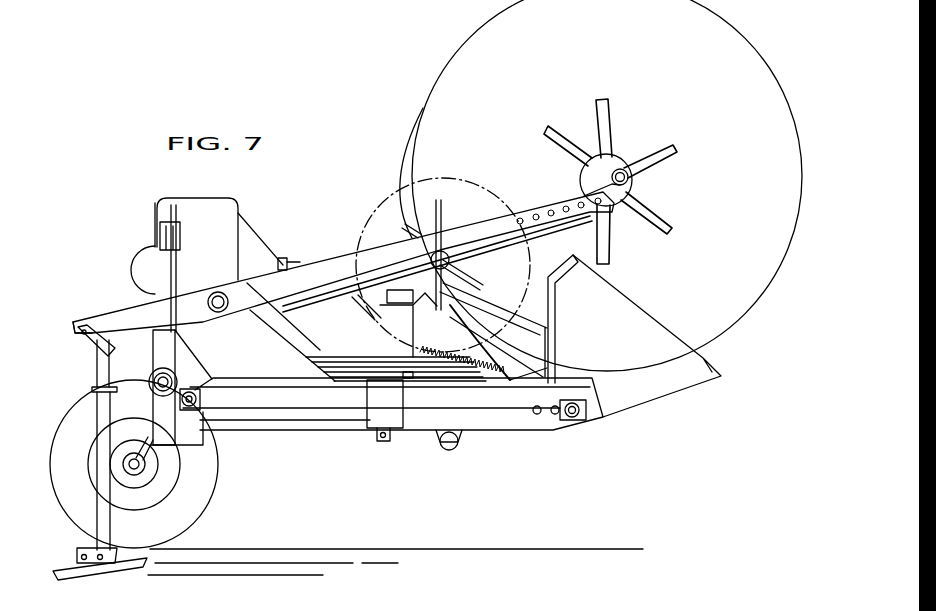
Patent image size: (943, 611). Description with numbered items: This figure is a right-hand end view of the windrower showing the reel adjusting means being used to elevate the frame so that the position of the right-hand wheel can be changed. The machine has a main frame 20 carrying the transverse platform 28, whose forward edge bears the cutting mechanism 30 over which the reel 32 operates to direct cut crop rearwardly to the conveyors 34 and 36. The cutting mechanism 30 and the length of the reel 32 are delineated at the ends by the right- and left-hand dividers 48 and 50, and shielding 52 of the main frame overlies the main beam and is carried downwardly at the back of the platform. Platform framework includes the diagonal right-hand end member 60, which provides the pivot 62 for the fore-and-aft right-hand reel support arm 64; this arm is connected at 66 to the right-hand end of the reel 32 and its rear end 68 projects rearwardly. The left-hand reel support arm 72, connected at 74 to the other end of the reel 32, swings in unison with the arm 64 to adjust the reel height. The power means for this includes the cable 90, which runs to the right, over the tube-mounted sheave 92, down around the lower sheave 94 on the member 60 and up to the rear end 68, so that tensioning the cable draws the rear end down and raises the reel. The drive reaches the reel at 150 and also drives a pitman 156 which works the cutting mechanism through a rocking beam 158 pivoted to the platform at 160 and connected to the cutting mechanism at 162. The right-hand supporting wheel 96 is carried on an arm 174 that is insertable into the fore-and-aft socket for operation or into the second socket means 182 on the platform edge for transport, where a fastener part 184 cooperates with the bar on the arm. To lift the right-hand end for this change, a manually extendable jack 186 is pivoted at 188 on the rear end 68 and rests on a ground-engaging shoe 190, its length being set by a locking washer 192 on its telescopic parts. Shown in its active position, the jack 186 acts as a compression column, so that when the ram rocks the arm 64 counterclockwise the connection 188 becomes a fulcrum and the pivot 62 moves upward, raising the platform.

The main frame 20 is at (159, 189).
The windrower platform 28 is at (590, 384).
The cutting mechanism 30 is at (520, 376).
The reel 32 is at (612, 116).
The conveyor 34 is at (346, 372).
The conveyor 36 is at (370, 358).
The right-hand divider 48 is at (721, 372).
The left-hand divider 50 is at (446, 341).
The shielding 52 is at (213, 204).
The diagonal right-hand end member 60 is at (136, 272).
The pivot 62 is at (214, 312).
The right-hand reel support arm 64 is at (277, 300).
The connection 66 is at (613, 206).
The rear end 68 is at (96, 318).
The left-hand reel support arm 72 is at (297, 313).
The connection 74 is at (426, 268).
The cable 90 is at (176, 276).
The tube-mounted sheave 92 is at (160, 231).
The lower sheave 94 is at (150, 392).
The right-hand supporting wheel 96 is at (75, 494).
The reel drive 150 is at (296, 262).
The pitman 156 is at (197, 412).
The rocking beam 158 is at (300, 411).
The pivot 160 is at (378, 420).
The connection 162 is at (588, 408).
The arm 174 is at (160, 482).
The second socket means 182 is at (460, 447).
The fastener part 184 is at (384, 441).
The manually extendable jack 186 is at (98, 410).
The pivotal connection 188 is at (78, 339).
The ground-engaging shoe 190 is at (66, 580).
The locking washer 192 is at (92, 387).